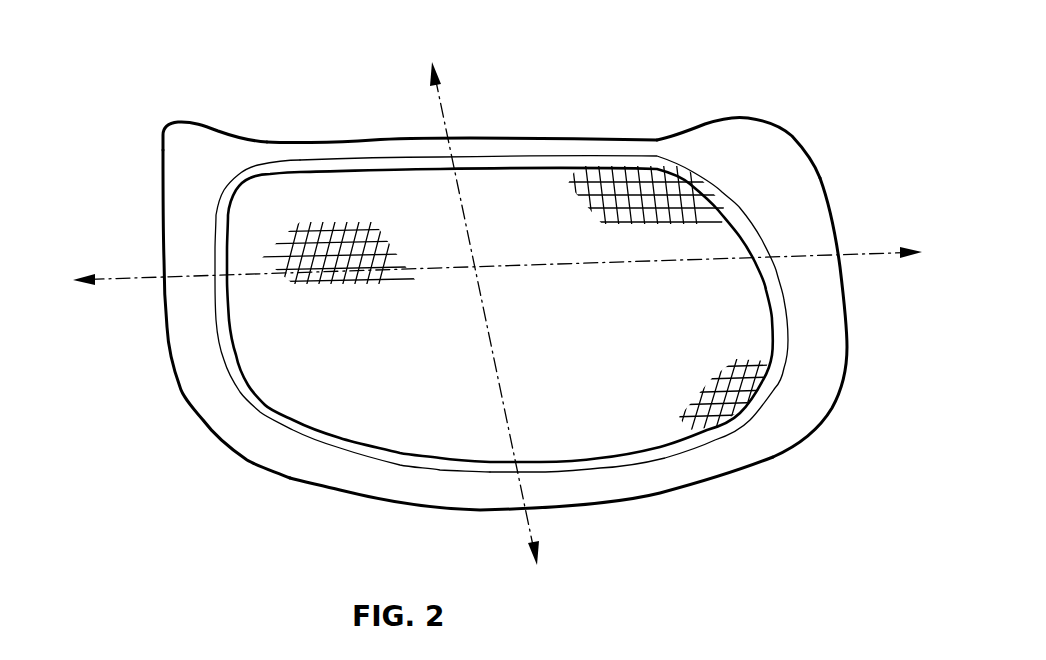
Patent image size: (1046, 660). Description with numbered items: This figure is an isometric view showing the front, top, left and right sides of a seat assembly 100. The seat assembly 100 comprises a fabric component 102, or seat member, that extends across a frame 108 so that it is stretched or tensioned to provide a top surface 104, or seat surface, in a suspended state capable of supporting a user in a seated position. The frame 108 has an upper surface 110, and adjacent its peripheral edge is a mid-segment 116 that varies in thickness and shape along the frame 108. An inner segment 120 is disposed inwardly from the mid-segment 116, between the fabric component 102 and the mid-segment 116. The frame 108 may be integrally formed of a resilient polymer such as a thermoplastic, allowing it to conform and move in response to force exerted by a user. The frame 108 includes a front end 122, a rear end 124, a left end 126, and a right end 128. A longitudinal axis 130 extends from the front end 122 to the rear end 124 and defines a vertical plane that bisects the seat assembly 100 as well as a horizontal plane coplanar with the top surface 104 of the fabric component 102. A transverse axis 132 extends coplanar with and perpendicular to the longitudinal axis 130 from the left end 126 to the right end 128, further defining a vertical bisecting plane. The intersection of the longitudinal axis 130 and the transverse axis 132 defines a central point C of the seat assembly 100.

The seat assembly 100 is at (797, 33).
The fabric component 102 is at (367, 265).
The top surface 104 is at (397, 253).
The frame 108 is at (587, 147).
The upper surface 110 is at (213, 147).
The mid-segment 116 is at (793, 210).
The inner segment 120 is at (240, 377).
The front end 122 is at (587, 507).
The rear end 124 is at (498, 138).
The left end 126 is at (177, 308).
The right end 128 is at (830, 322).
The longitudinal axis 130 is at (528, 530).
The transverse axis 132 is at (125, 285).